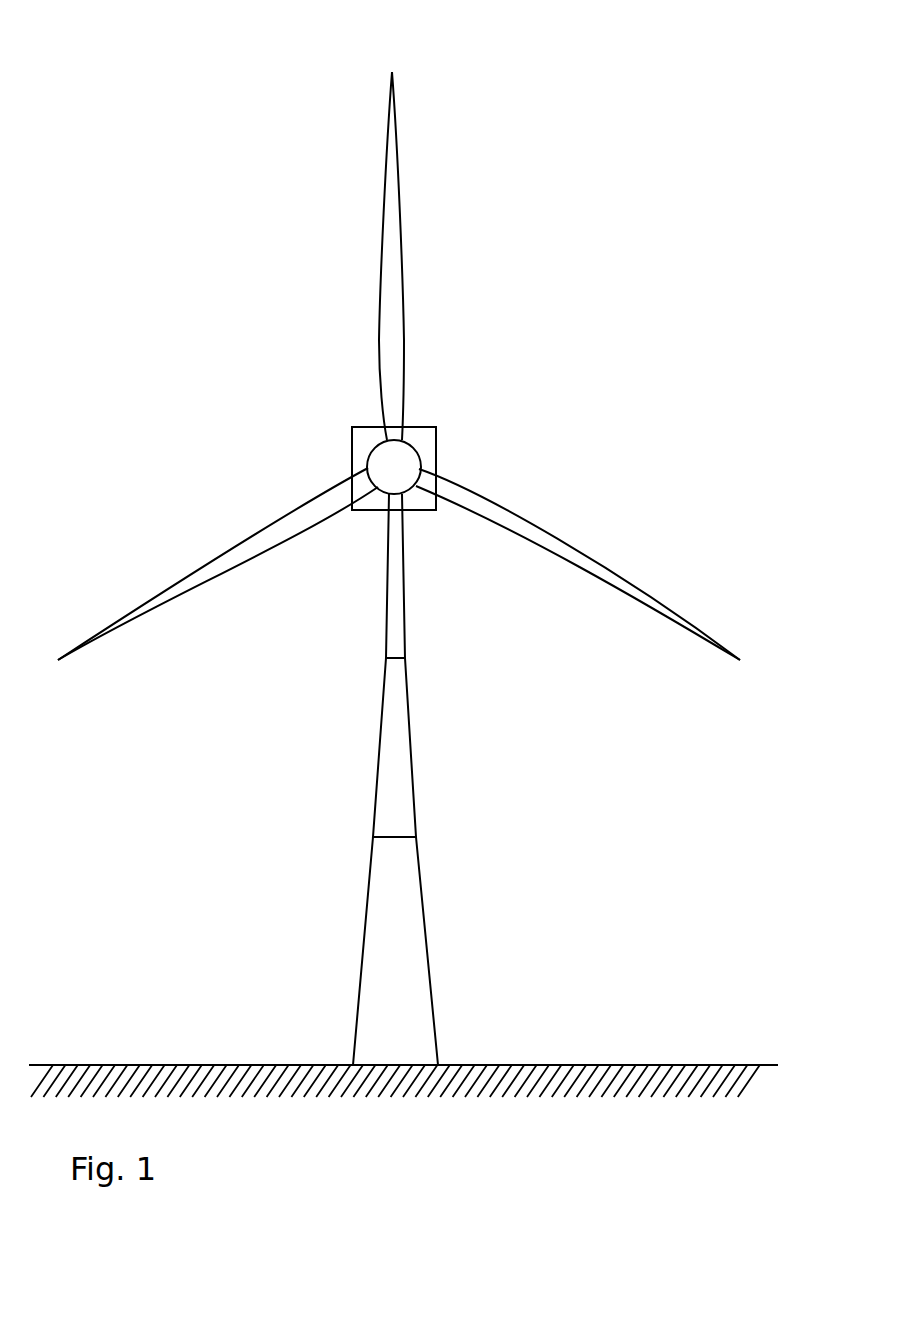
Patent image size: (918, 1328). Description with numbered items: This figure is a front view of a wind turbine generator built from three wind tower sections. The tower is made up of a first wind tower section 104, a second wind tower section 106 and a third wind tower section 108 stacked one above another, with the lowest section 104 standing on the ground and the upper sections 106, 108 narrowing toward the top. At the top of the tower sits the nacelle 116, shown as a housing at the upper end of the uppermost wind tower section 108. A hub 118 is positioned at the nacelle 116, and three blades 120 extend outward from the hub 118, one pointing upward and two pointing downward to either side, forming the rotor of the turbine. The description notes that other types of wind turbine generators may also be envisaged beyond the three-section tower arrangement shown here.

The wind tower section 104 is at (388, 967).
The wind tower section 106 is at (398, 715).
The wind tower section 108 is at (398, 628).
The nacelle 116 is at (363, 432).
The hub 118 is at (388, 477).
The blade 120 is at (510, 513).